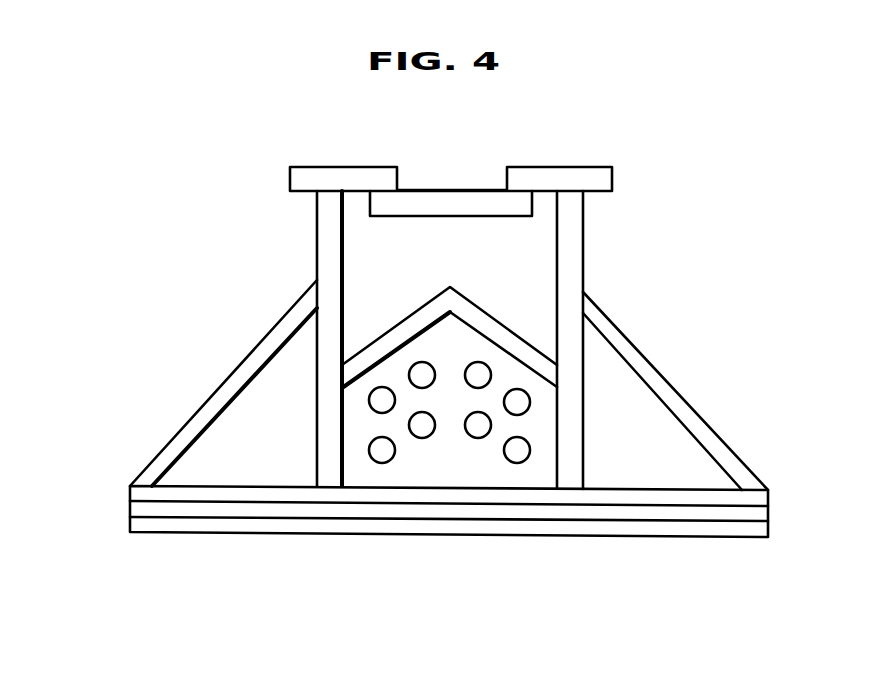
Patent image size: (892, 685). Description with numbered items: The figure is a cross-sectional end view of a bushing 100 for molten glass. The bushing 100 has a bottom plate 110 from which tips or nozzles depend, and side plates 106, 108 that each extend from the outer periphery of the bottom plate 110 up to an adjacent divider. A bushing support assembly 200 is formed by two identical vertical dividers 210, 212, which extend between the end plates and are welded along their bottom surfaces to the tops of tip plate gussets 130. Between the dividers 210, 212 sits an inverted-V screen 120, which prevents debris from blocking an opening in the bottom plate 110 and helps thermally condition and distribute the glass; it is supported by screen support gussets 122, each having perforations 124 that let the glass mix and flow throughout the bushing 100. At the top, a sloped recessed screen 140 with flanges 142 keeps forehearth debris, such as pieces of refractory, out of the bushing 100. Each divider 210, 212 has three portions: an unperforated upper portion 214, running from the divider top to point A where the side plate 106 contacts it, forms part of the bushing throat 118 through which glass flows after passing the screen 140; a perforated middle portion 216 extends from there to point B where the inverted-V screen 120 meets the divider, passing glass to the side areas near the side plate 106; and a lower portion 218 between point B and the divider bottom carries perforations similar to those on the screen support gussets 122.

The bushing 100 is at (297, 98).
The bushing support assembly 200 is at (161, 181).
The side plate 106 is at (198, 423).
The side plate 108 is at (670, 398).
The bottom plate 110 is at (680, 529).
The bushing throat 118 is at (533, 243).
The inverted-V screen 120 is at (525, 352).
The screen support gusset 122 is at (540, 405).
The perforations 124 is at (540, 447).
The tip plate gusset 130 is at (135, 508).
The sloped recessed screen 140 is at (512, 175).
The flanges 142 is at (605, 180).
The divider 210 is at (328, 212).
The divider 212 is at (575, 267).
The upper portion 214 is at (327, 240).
The middle portion 216 is at (330, 330).
The lower portion 218 is at (327, 445).
The point A is at (332, 295).
The point B is at (330, 380).